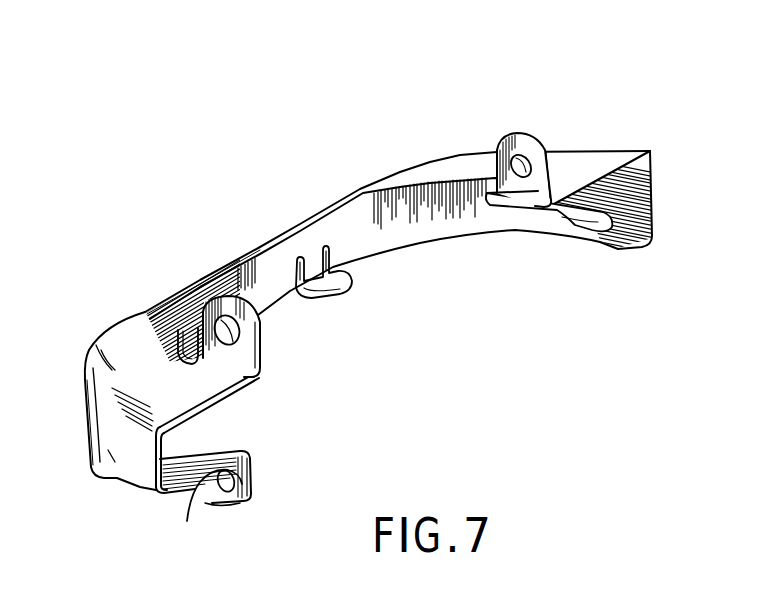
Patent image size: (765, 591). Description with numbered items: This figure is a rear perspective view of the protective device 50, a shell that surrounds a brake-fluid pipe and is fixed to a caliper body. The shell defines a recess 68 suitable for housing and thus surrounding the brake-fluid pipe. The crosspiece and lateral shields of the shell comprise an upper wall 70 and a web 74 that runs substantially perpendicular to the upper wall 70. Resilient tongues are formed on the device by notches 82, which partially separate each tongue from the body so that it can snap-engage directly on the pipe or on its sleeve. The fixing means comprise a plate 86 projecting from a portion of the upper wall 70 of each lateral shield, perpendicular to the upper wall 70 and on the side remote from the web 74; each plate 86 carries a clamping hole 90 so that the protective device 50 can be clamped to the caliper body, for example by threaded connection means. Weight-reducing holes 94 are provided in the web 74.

The protective device 50 is at (370, 282).
The recess 68 is at (373, 232).
The upper wall 70 is at (130, 348).
The web 74 is at (52, 478).
The notches 82 is at (355, 272).
The plate 86 is at (503, 162).
The clamping hole 90 is at (498, 167).
The weight-reducing holes 94 is at (656, 162).